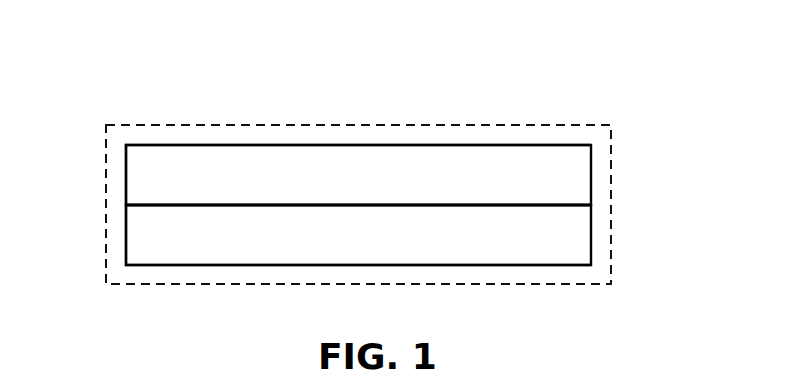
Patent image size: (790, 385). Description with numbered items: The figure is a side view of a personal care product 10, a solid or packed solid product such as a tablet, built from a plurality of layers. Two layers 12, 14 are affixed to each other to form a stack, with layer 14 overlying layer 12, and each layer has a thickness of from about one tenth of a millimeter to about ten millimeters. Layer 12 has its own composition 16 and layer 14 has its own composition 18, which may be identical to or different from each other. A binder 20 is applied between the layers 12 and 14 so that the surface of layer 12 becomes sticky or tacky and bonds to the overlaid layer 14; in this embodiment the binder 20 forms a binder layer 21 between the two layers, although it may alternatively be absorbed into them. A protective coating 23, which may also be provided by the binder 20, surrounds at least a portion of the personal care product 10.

The personal care product 10 is at (658, 54).
The layer 12 is at (580, 227).
The layer 14 is at (580, 180).
The composition 16 is at (133, 232).
The composition 18 is at (133, 185).
The binder 20 is at (254, 205).
The binder layer 21 is at (422, 205).
The protective coating 23 is at (560, 284).